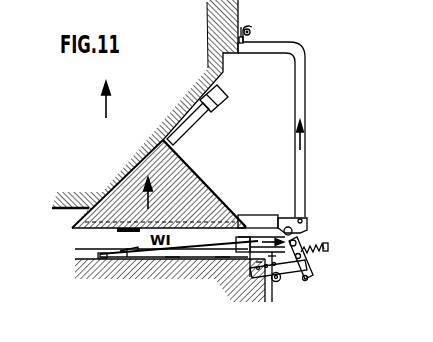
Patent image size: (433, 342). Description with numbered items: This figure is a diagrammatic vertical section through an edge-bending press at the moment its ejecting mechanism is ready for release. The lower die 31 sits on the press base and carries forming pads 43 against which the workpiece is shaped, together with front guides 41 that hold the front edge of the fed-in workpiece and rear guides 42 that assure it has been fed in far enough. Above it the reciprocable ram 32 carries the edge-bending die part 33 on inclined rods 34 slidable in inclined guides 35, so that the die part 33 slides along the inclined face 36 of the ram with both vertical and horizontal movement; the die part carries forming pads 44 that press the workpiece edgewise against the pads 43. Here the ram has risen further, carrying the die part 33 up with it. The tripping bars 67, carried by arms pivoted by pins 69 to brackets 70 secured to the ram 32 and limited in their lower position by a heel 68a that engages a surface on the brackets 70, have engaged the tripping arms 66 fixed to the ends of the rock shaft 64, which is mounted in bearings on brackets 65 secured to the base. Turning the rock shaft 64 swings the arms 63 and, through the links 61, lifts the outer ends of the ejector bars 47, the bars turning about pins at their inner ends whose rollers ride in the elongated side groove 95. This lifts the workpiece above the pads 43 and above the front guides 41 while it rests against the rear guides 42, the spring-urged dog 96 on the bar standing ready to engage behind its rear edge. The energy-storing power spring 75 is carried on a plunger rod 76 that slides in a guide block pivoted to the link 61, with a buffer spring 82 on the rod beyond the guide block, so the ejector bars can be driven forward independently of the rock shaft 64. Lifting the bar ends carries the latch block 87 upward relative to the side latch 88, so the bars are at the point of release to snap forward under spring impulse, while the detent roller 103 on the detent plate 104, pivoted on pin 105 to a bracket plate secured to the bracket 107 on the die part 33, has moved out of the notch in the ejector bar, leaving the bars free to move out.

The lower die 31 is at (80, 267).
The ram 32 is at (64, 206).
The edge-bending die part 33 is at (199, 177).
The inclined rods 34 is at (190, 124).
The inclined guides 35 is at (222, 108).
The inclined face 36 is at (118, 164).
The front guides 41 is at (170, 262).
The rear guides 42 is at (137, 246).
The forming pads 43 is at (222, 259).
The forming pads 44 is at (118, 232).
The ejector bars 47 is at (232, 243).
The links 61 is at (310, 268).
The arms 63 is at (307, 282).
The rock shaft 64 is at (281, 281).
The brackets 65 is at (273, 285).
The tripping arms 66 is at (292, 287).
The tripping bars 67 is at (306, 104).
The heel 68a is at (241, 55).
The pins 69 is at (251, 32).
The brackets 70 is at (246, 24).
The power spring 75 is at (296, 243).
The plunger rod 76 is at (329, 251).
The buffer spring 82 is at (327, 249).
The latch block 87 is at (260, 262).
The side latch 88 is at (272, 256).
The side groove 95 is at (98, 259).
The dog 96 is at (127, 254).
The detent roller 103 is at (292, 231).
The detent plate 104 is at (300, 219).
The pin 105 is at (303, 221).
The bracket 107 is at (247, 222).